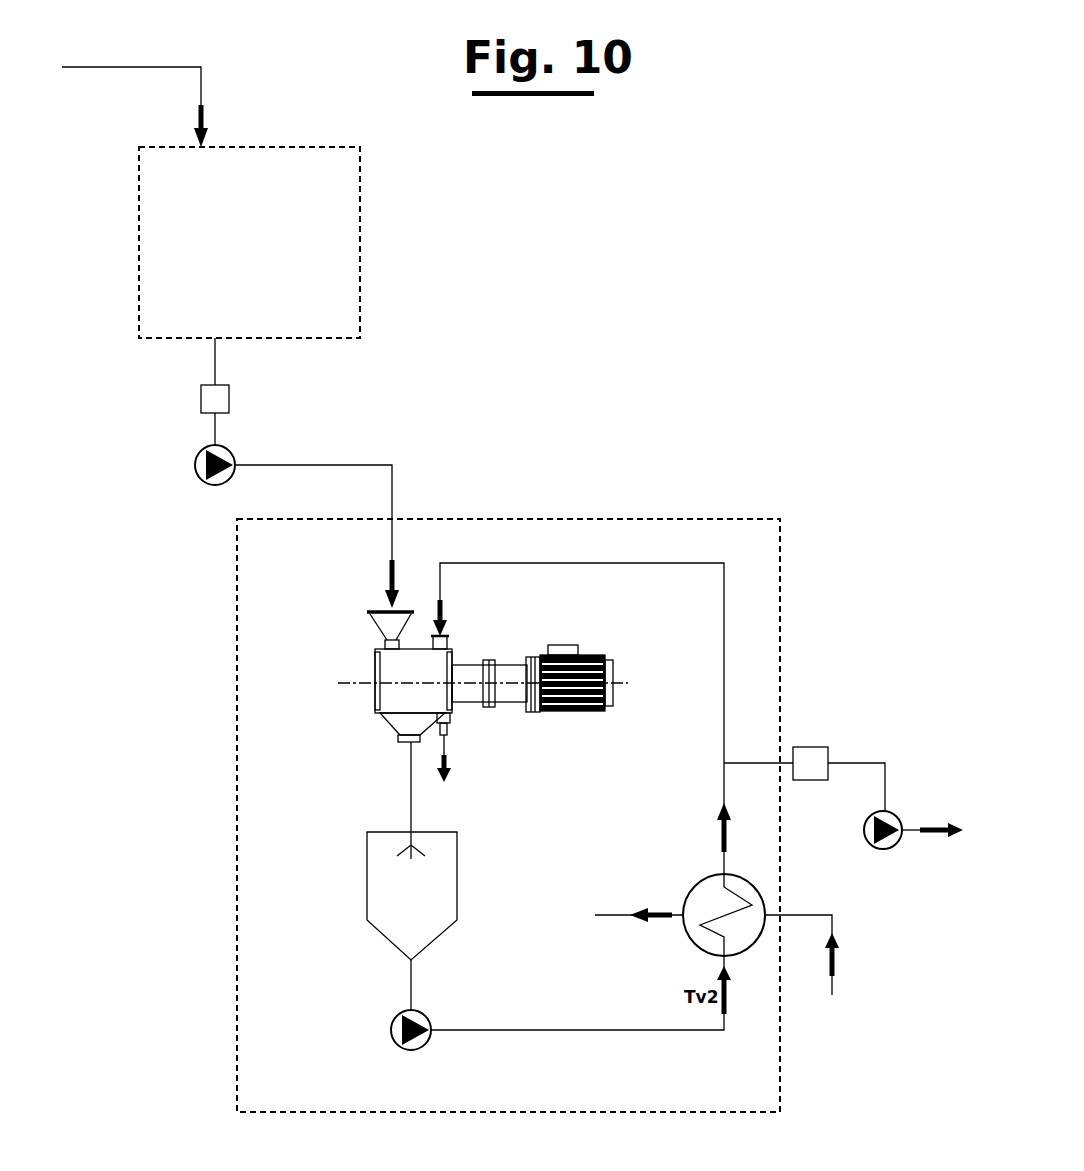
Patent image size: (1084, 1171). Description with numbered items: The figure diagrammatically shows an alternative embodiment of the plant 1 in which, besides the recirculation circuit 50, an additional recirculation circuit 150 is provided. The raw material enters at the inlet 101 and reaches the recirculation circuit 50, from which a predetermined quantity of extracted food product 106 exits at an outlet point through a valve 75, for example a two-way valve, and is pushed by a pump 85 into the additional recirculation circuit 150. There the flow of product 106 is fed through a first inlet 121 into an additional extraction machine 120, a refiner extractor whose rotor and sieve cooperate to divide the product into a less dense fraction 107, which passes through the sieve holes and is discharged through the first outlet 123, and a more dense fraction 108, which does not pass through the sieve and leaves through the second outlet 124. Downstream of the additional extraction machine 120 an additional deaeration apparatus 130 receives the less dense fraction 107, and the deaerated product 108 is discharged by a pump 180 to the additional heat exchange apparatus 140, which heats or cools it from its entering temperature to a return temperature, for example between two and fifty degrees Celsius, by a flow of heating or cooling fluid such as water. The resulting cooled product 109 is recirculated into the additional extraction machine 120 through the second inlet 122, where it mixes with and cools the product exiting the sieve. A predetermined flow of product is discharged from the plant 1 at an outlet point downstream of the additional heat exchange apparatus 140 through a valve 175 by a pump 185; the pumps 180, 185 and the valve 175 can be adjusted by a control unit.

The plant 1 is at (736, 326).
The feed inlet 101 is at (83, 63).
The recirculation circuit 50 is at (151, 203).
The valve 75 is at (193, 396).
The pump 85 is at (197, 481).
The product 106 is at (304, 462).
The additional recirculation circuit 150 is at (736, 534).
The additional extraction machine 120 is at (341, 652).
The first inlet 121 is at (369, 610).
The second inlet 122 is at (458, 643).
The first outlet 123 is at (396, 725).
The second outlet 124 is at (453, 725).
The less dense fraction 107 is at (408, 790).
The more dense fraction 108 is at (453, 753).
The additional deaeration apparatus 130 is at (364, 887).
The additional heat exchange apparatus 140 is at (689, 874).
The cooled product 109 is at (722, 596).
The valve 175 is at (834, 746).
The pump 180 is at (398, 1043).
The pump 185 is at (894, 851).